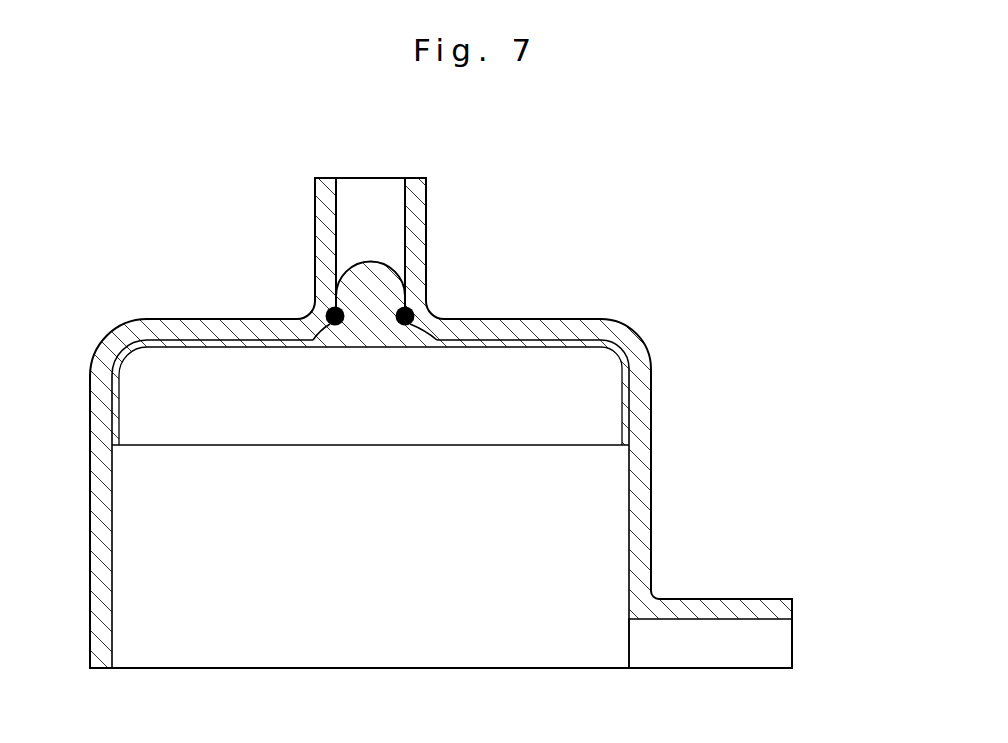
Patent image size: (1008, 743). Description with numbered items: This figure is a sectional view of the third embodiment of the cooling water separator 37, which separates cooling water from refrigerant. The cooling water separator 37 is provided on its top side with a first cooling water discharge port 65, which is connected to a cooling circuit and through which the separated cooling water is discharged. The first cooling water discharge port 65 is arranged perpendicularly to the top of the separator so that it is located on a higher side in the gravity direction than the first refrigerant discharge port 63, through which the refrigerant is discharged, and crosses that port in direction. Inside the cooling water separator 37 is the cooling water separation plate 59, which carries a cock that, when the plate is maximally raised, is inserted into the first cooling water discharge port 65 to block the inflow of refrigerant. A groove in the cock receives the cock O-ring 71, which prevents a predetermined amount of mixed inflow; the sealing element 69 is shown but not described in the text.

The cooling water separator 37 is at (117, 325).
The cooling water separation plate 59 is at (556, 380).
The first refrigerant discharge port 63 is at (777, 650).
The first cooling water discharge port 65 is at (363, 195).
The plug 69 is at (380, 288).
The cock O-ring 71 is at (323, 303).